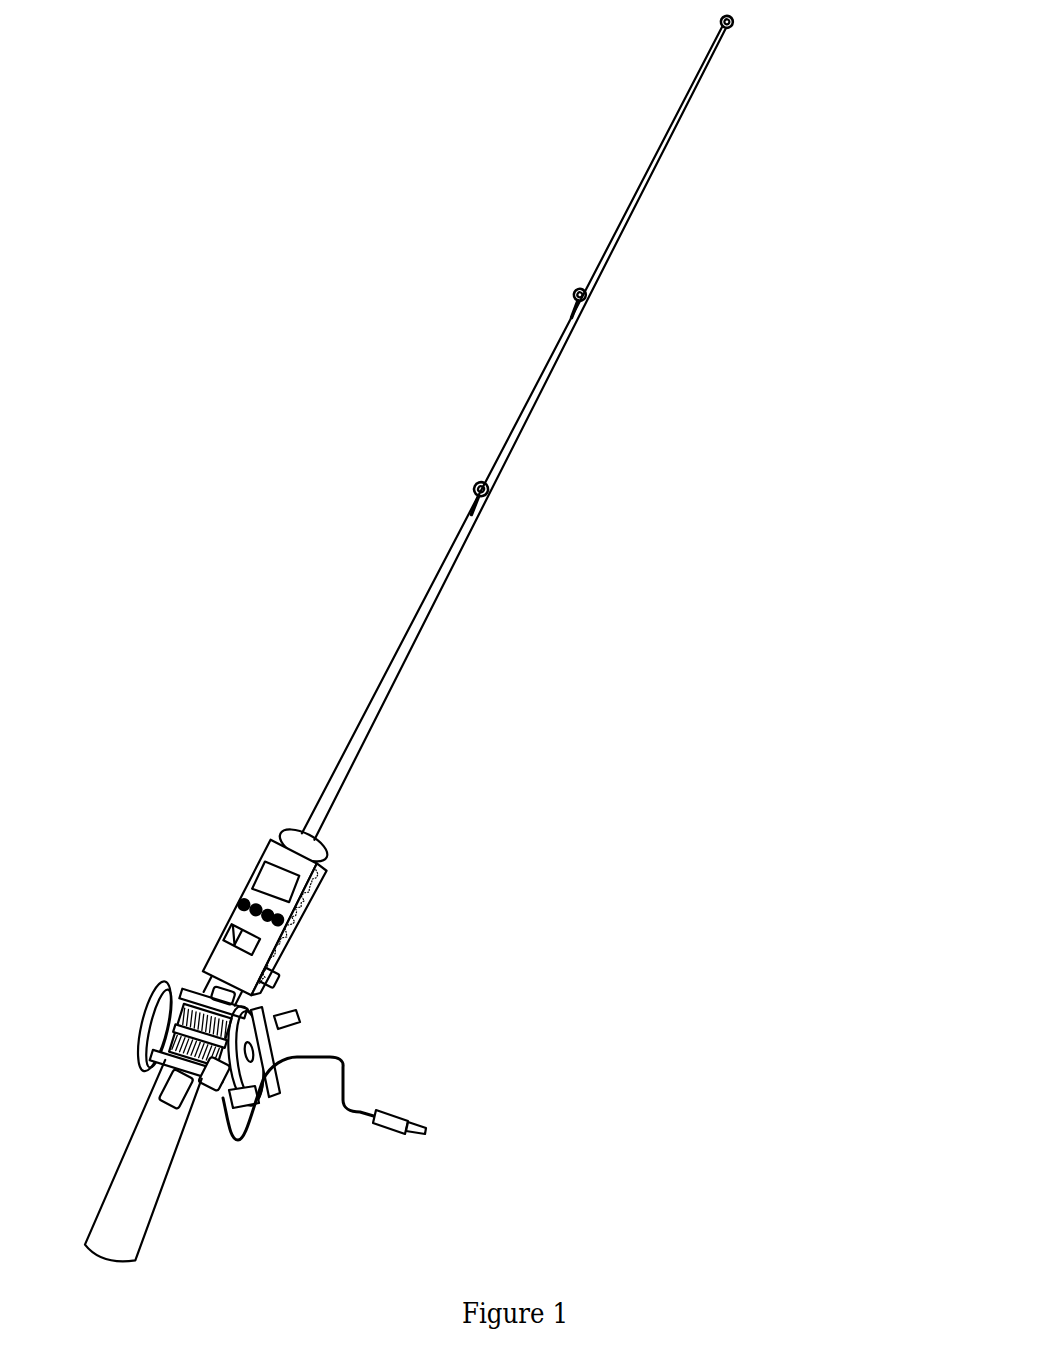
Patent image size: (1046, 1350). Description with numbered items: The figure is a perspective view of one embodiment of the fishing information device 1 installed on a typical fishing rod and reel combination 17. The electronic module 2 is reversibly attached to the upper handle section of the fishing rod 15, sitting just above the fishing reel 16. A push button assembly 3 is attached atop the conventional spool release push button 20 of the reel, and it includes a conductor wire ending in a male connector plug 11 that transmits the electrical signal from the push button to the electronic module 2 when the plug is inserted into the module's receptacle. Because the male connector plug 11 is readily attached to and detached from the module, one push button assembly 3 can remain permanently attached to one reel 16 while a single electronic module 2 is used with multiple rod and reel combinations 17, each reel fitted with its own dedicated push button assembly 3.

The fishing information device 1 is at (399, 1012).
The electronic module 2 is at (314, 925).
The push button assembly 3 is at (295, 1089).
The male connector plug 11 is at (463, 1110).
The fishing rod 15 is at (411, 695).
The fishing reel 16 is at (162, 968).
The rod and reel combination 17 is at (793, 855).
The fishing reel spool release push button 20 is at (215, 1109).